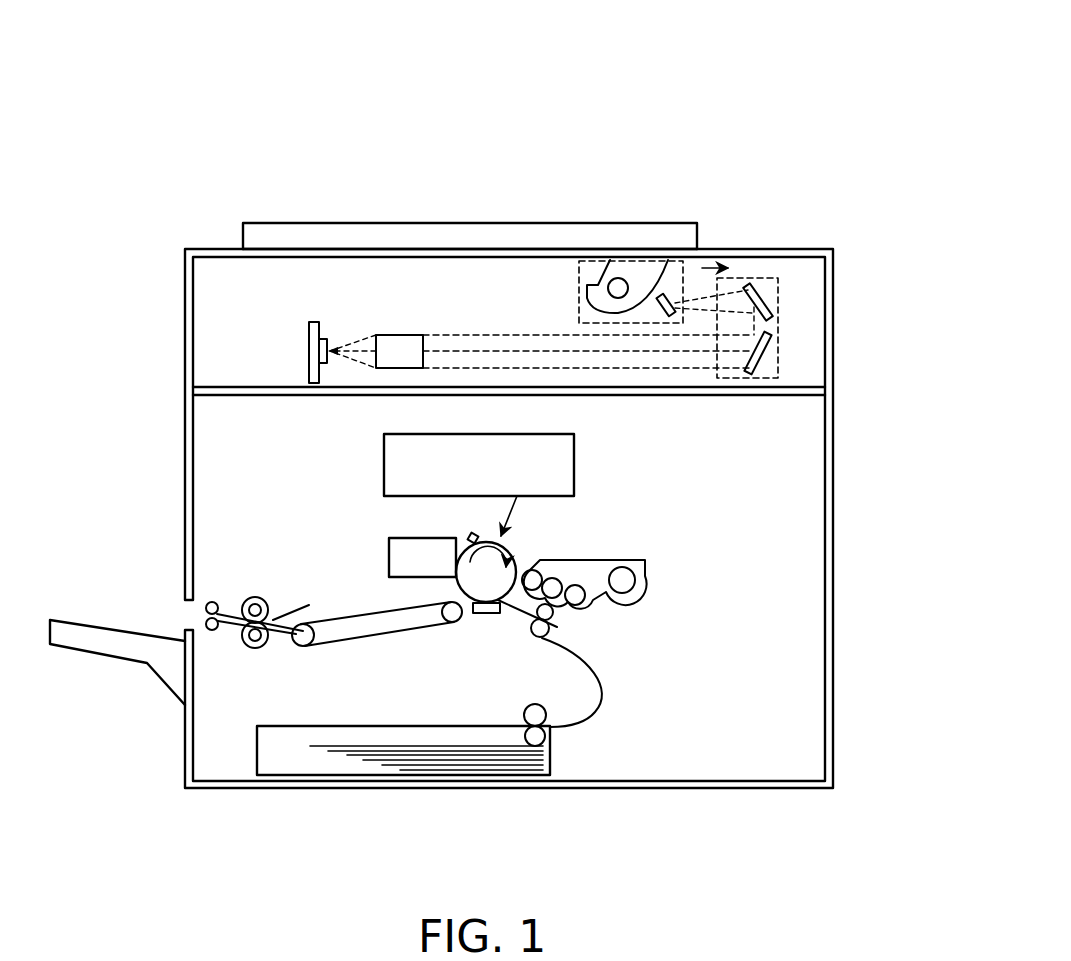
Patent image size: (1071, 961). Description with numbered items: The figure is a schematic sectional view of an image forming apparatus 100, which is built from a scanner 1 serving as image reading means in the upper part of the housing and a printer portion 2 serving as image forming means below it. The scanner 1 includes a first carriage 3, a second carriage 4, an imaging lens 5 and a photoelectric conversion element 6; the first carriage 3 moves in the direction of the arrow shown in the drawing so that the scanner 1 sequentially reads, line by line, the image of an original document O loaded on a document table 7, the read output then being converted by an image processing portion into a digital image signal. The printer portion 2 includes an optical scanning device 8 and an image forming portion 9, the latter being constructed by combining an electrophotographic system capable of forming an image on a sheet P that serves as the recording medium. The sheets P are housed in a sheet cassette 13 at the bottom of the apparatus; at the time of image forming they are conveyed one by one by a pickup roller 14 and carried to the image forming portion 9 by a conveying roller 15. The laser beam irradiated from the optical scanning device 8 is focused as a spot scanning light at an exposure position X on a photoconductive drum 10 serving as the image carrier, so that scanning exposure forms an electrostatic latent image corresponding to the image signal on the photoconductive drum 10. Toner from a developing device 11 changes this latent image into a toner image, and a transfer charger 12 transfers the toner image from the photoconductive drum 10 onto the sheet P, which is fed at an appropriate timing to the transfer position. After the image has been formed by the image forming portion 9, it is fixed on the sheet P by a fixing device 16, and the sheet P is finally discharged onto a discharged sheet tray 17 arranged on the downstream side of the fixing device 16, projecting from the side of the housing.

The image forming apparatus 100 is at (752, 108).
The scanner 1 is at (216, 331).
The printer portion 2 is at (805, 598).
The first carriage 3 is at (585, 261).
The second carriage 4 is at (760, 278).
The imaging lens 5 is at (404, 335).
The photoelectric conversion element 6 is at (309, 331).
The document table 7 is at (313, 257).
The original document O is at (472, 247).
The optical scanning device 8 is at (574, 462).
The image forming portion 9 is at (600, 632).
The photoconductive drum 10 is at (457, 586).
The exposure position X is at (508, 548).
The developing device 11 is at (645, 575).
The transfer charger 12 is at (485, 614).
The sheet cassette 13 is at (284, 763).
The pickup roller 14 is at (535, 736).
The conveying roller 15 is at (540, 638).
The fixing device 16 is at (255, 597).
The discharged sheet tray 17 is at (108, 643).
The sheet P is at (452, 770).